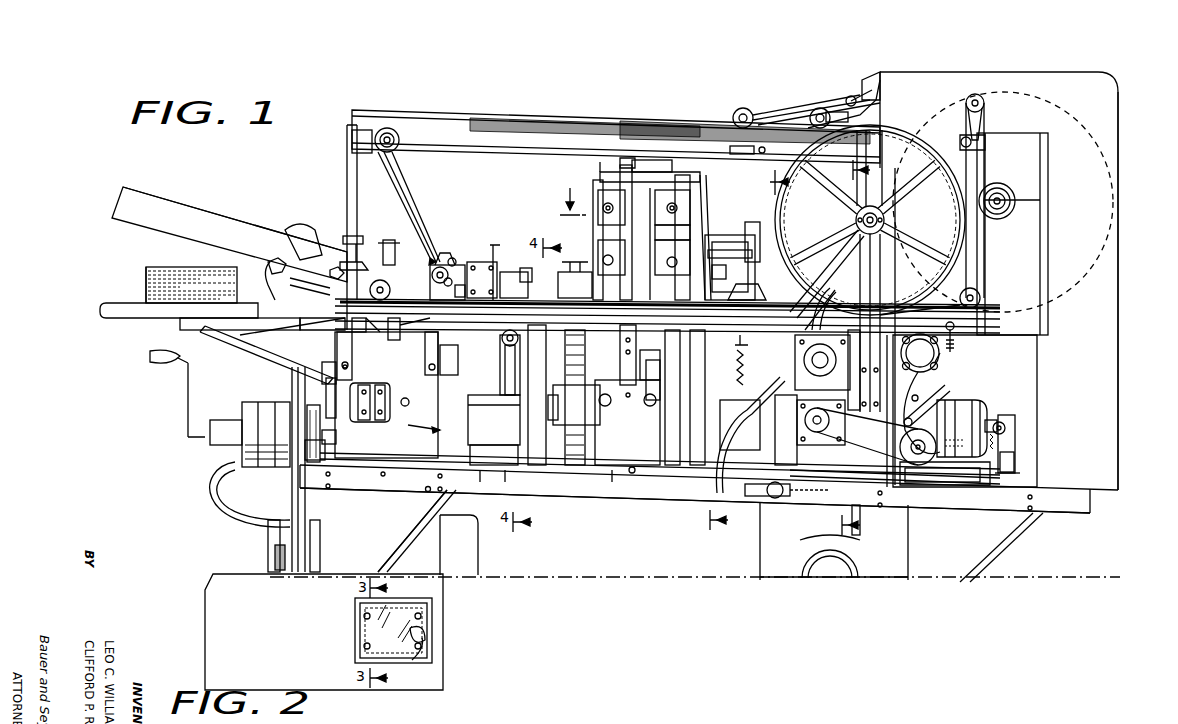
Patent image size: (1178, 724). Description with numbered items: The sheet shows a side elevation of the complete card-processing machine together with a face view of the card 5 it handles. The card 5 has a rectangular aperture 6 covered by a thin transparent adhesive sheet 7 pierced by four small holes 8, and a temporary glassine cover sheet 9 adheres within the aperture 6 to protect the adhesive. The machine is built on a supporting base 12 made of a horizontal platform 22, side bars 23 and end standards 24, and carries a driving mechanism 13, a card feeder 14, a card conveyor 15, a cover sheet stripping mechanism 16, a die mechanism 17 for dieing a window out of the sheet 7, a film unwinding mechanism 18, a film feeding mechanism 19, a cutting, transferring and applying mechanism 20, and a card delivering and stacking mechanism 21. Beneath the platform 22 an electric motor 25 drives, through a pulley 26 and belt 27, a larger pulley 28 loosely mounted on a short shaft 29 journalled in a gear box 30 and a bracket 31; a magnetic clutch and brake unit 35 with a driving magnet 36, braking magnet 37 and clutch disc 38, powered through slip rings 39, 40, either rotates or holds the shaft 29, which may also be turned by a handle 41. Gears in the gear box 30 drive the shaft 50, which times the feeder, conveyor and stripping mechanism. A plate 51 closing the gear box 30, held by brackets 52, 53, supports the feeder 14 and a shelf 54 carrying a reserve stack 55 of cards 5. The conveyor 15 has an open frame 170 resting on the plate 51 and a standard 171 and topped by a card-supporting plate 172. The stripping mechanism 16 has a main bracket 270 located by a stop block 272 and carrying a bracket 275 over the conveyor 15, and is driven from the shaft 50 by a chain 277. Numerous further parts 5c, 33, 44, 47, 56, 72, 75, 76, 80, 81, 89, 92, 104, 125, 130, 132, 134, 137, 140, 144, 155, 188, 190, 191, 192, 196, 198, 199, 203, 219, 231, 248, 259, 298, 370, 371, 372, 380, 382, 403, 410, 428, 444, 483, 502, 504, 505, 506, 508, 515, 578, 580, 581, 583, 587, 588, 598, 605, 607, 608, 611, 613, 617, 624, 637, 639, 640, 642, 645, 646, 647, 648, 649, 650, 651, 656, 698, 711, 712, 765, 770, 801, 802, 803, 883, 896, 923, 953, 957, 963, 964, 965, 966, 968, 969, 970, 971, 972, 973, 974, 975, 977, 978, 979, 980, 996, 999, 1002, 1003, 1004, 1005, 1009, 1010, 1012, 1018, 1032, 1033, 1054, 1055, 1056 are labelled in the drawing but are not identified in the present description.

In FIG. 1, the card 5 is at (166, 266).
In FIG. 2, the card 5 is at (207, 644).
In FIG. 1, the roller 5c is at (733, 112).
In FIG. 2, the aperture 6 is at (424, 632).
In FIG. 2, the sheet 7 is at (402, 602).
In FIG. 2, the holes 8 is at (420, 612).
In FIG. 2, the temporary cover sheet 9 is at (416, 658).
In FIG. 1, the supporting base 12 is at (1030, 515).
In FIG. 1, the driving mechanism 13 is at (314, 400).
In FIG. 1, the card feeder 14 is at (218, 200).
In FIG. 1, the card conveyor 15 is at (485, 338).
In FIG. 1, the cover sheet stripping mechanism 16 is at (460, 262).
In FIG. 1, the die mechanism 17 is at (592, 185).
In FIG. 1, the unwinding mechanism 18 is at (1050, 280).
In FIG. 1, the feeding mechanism 19 is at (766, 222).
In FIG. 1, the cutting, transferring and applying mechanism 20 is at (740, 245).
In FIG. 1, the card delivering and stacking mechanism 21 is at (790, 104).
In FIG. 1, the platform 22 is at (1094, 496).
In FIG. 1, the bars 23 is at (1080, 510).
In FIG. 1, the standards 24 is at (985, 552).
In FIG. 1, the electric motor 25 is at (460, 540).
In FIG. 1, the pulley 26 is at (318, 535).
In FIG. 1, the belt 27 is at (272, 535).
In FIG. 1, the pulley 28 is at (292, 482).
In FIG. 1, the shaft 29 is at (220, 418).
In FIG. 1, the gear box 30 is at (428, 493).
In FIG. 1, the bracket 31 is at (212, 490).
In FIG. 1, the leg brace 33 is at (400, 547).
In FIG. 1, the magnetic clutch and brake unit 35 is at (250, 470).
In FIG. 1, the driving magnet 36 is at (283, 402).
In FIG. 1, the braking magnet 37 is at (242, 405).
In FIG. 1, the clutch disc 38 is at (262, 402).
In FIG. 1, the slip ring 39 is at (310, 462).
In FIG. 1, the slip ring 40 is at (336, 437).
In FIG. 1, the handle 41 is at (186, 396).
In FIG. 1, the bracket 44 is at (332, 405).
In FIG. 1, the support block 47 is at (348, 370).
In FIG. 1, the shaft 50 is at (409, 403).
In FIG. 1, the plate 51 is at (203, 330).
In FIG. 1, the bracket 52 is at (270, 354).
In FIG. 1, the bracket 53 is at (338, 345).
In FIG. 1, the shelf 54 is at (130, 318).
In FIG. 1, the reserve stack 55 is at (146, 281).
In FIG. 1, the support block 56 is at (322, 326).
In FIG. 1, the hopper plate 72 is at (122, 195).
In FIG. 1, the pivot arm 75 is at (292, 282).
In FIG. 1, the stop 76 is at (268, 262).
In FIG. 1, the plate 80 is at (350, 262).
In FIG. 1, the guide 81 is at (295, 228).
In FIG. 1, the link 89 is at (270, 330).
In FIG. 1, the roller 92 is at (372, 296).
In FIG. 1, the bracket 104 is at (375, 420).
In FIG. 1, the block 125 is at (380, 326).
In FIG. 1, the pad 130 is at (330, 272).
In FIG. 1, the hopper edge 132 is at (265, 236).
In FIG. 1, the slide 134 is at (350, 236).
In FIG. 1, the belt 137 is at (406, 200).
In FIG. 1, the valve 140 is at (390, 238).
In FIG. 1, the rod 144 is at (356, 244).
In FIG. 1, the upright 155 is at (348, 166).
In FIG. 1, the frame 170 is at (500, 400).
In FIG. 1, the standard 171 is at (690, 448).
In FIG. 1, the plate 172 is at (478, 322).
In FIG. 1, the cam roller 188 is at (452, 258).
In FIG. 1, the block 190 is at (420, 334).
In FIG. 1, the pin 191 is at (388, 340).
In FIG. 1, the link 192 is at (430, 345).
In FIG. 1, the post 196 is at (684, 320).
In FIG. 1, the slide bar 198 is at (545, 318).
In FIG. 1, the post 199 is at (600, 320).
In FIG. 1, the roller 203 is at (450, 278).
In FIG. 1, the bracket 219 is at (540, 270).
In FIG. 1, the rack 231 is at (562, 450).
In FIG. 1, the gear 248 is at (545, 430).
In FIG. 1, the block 259 is at (462, 284).
In FIG. 1, the main bracket 270 is at (445, 375).
In FIG. 1, the stop block 272 is at (488, 476).
In FIG. 1, the bracket 275 is at (496, 244).
In FIG. 1, the chain 277 is at (508, 395).
In FIG. 1, the plate 298 is at (484, 280).
In FIG. 1, the pin 370 is at (615, 480).
In FIG. 1, the roller 371 is at (628, 480).
In FIG. 1, the bracket 372 is at (606, 170).
In FIG. 1, the lower rail 380 is at (556, 474).
In FIG. 1, the hub 382 is at (588, 440).
In FIG. 1, the housing 403 is at (614, 418).
In FIG. 1, the block 410 is at (640, 405).
In FIG. 1, the bar 428 is at (680, 235).
In FIG. 1, the carriage 444 is at (610, 240).
In FIG. 1, the bar 483 is at (630, 168).
In FIG. 1, the wheel 502 is at (808, 560).
In FIG. 1, the section pin 504 is at (864, 519).
In FIG. 1, the fitting 505 is at (762, 497).
In FIG. 1, the housing 506 is at (710, 506).
In FIG. 1, the plate 508 is at (705, 262).
In FIG. 1, the rod 515 is at (710, 195).
In FIG. 1, the guard outline 578 is at (1065, 110).
In FIG. 1, the housing 580 is at (1040, 352).
In FIG. 1, the base strip 581 is at (985, 486).
In FIG. 1, the side panel 583 is at (1119, 288).
In FIG. 1, the bearing 587 is at (1002, 190).
In FIG. 1, the bearing housing 588 is at (1000, 214).
In FIG. 1, the arm 598 is at (925, 374).
In FIG. 1, the rod 605 is at (956, 336).
In FIG. 1, the link 607 is at (942, 353).
In FIG. 1, the pin 608 is at (920, 395).
In FIG. 1, the link 611 is at (922, 405).
In FIG. 1, the bracket 613 is at (1016, 430).
In FIG. 1, the spring 617 is at (1016, 437).
In FIG. 1, the bolt 624 is at (1015, 456).
In FIG. 1, the post 637 is at (795, 450).
In FIG. 1, the bar 639 is at (865, 370).
In FIG. 1, the plate 640 is at (845, 490).
In FIG. 1, the rail 642 is at (820, 445).
In FIG. 1, the motor 645 is at (985, 405).
In FIG. 1, the motor fins 646 is at (1000, 398).
In FIG. 1, the plate 647 is at (1020, 470).
In FIG. 1, the pulley 648 is at (920, 467).
In FIG. 1, the belt 649 is at (875, 425).
In FIG. 1, the plate 650 is at (839, 422).
In FIG. 1, the pulley 651 is at (815, 432).
In FIG. 1, the gear 656 is at (822, 362).
In FIG. 1, the arrow lever 698 is at (424, 432).
In FIG. 1, the pin 711 is at (502, 475).
In FIG. 1, the block 712 is at (480, 415).
In FIG. 1, the spring 765 is at (728, 445).
In FIG. 1, the bar 770 is at (884, 183).
In FIG. 1, the pipe 801 is at (714, 488).
In FIG. 1, the bracket 802 is at (752, 222).
In FIG. 1, the coupling 803 is at (775, 497).
In FIG. 1, the bar 883 is at (652, 402).
In FIG. 1, the housing 896 is at (800, 545).
In FIG. 1, the base 923 is at (762, 290).
In FIG. 1, the plate 953 is at (990, 243).
In FIG. 1, the link 957 is at (818, 240).
In FIG. 1, the spokes 963 is at (900, 150).
In FIG. 1, the hub 964 is at (886, 220).
In FIG. 1, the column 965 is at (882, 285).
In FIG. 1, the pivot 966 is at (820, 108).
In FIG. 1, the arm 968 is at (868, 118).
In FIG. 1, the bracket 969 is at (884, 93).
In FIG. 1, the pulley 970 is at (985, 103).
In FIG. 1, the belt 971 is at (985, 122).
In FIG. 1, the bracket 972 is at (986, 145).
In FIG. 1, the pulley 973 is at (982, 300).
In FIG. 1, the link 974 is at (978, 308).
In FIG. 1, the link 975 is at (850, 310).
In FIG. 1, the link 977 is at (820, 295).
In FIG. 1, the gear 978 is at (920, 353).
In FIG. 1, the link 979 is at (812, 300).
In FIG. 1, the gear 980 is at (920, 353).
In FIG. 1, the section marker 996 is at (781, 177).
In FIG. 1, the block 999 is at (730, 150).
In FIG. 1, the top beam 1002 is at (456, 113).
In FIG. 1, the beam edge 1003 is at (500, 152).
In FIG. 1, the section marker 1004 is at (848, 148).
In FIG. 1, the belt 1005 is at (400, 165).
In FIG. 1, the pulley 1009 is at (388, 126).
In FIG. 1, the bracket 1010 is at (360, 135).
In FIG. 1, the pulley hub 1012 is at (400, 140).
In FIG. 1, the belt 1018 is at (392, 185).
In FIG. 1, the hatch strip 1032 is at (556, 116).
In FIG. 1, the hatch strip 1033 is at (658, 118).
In FIG. 1, the rod 1054 is at (742, 108).
In FIG. 1, the rod 1055 is at (775, 108).
In FIG. 1, the pivot 1056 is at (858, 98).